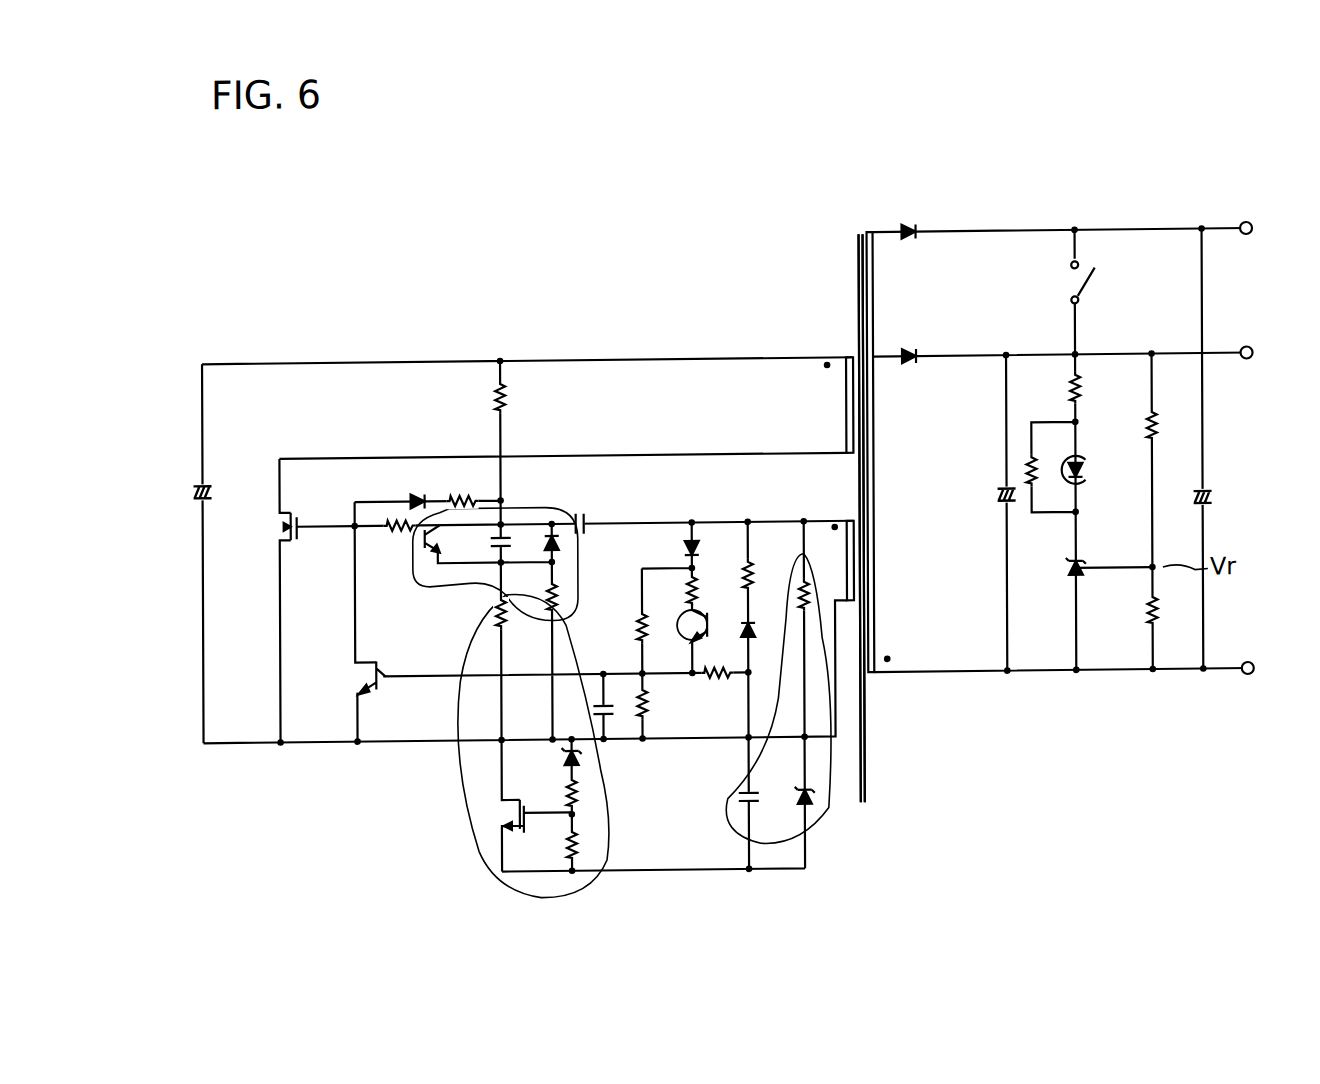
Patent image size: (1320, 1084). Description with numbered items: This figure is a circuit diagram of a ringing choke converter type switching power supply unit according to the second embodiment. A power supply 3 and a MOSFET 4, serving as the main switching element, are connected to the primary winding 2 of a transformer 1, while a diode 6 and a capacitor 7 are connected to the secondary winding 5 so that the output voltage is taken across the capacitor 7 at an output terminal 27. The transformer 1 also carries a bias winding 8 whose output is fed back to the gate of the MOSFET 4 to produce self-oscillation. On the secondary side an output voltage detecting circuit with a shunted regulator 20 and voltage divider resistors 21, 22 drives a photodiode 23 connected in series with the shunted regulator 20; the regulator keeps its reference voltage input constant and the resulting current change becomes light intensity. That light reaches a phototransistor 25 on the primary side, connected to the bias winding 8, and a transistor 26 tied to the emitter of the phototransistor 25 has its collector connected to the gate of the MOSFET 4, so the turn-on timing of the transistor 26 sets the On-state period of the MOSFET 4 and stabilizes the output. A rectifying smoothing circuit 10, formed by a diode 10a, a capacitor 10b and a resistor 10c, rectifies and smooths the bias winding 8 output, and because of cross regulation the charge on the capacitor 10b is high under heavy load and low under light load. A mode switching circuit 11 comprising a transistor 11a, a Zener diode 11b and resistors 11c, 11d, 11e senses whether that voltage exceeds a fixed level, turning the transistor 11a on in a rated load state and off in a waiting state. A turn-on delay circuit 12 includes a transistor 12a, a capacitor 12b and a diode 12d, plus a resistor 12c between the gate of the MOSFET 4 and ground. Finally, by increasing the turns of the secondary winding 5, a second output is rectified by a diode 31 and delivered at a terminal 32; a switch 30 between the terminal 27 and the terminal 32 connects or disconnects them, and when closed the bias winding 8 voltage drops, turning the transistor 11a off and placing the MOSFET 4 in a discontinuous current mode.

The transformer 1 is at (862, 360).
The primary winding 2 is at (846, 382).
The power supply 3 is at (195, 486).
The MOSFET 4 is at (275, 543).
The secondary winding 5 is at (873, 365).
The diode 6 is at (918, 376).
The capacitor 7 is at (1000, 506).
The bias winding 8 is at (834, 524).
The rectifying smoothing circuit 10 is at (830, 751).
The diode 10a is at (812, 800).
The capacitor 10b is at (745, 802).
The resistor 10c is at (810, 598).
The mode switching circuit 11 is at (532, 780).
The transistor 11a is at (500, 812).
The Zener diode 11b is at (583, 757).
The resistor 11c is at (584, 795).
The resistor 11d is at (584, 847).
The resistor 11e is at (498, 626).
The turn-on delay circuit 12 is at (538, 513).
The transistor 12a is at (453, 520).
The capacitor 12b is at (508, 534).
The resistor 12c is at (562, 598).
The diode 12d is at (560, 544).
The shunted regulator 20 is at (1068, 583).
The voltage divider resistor 21 is at (1163, 432).
The voltage divider resistor 22 is at (1163, 616).
The photodiode 23 is at (1092, 478).
The phototransistor 25 is at (690, 650).
The transistor 26 is at (352, 690).
The output terminal 27 is at (1253, 354).
The switch 30 is at (1098, 272).
The diode 31 is at (918, 230).
The terminal 32 is at (1253, 230).